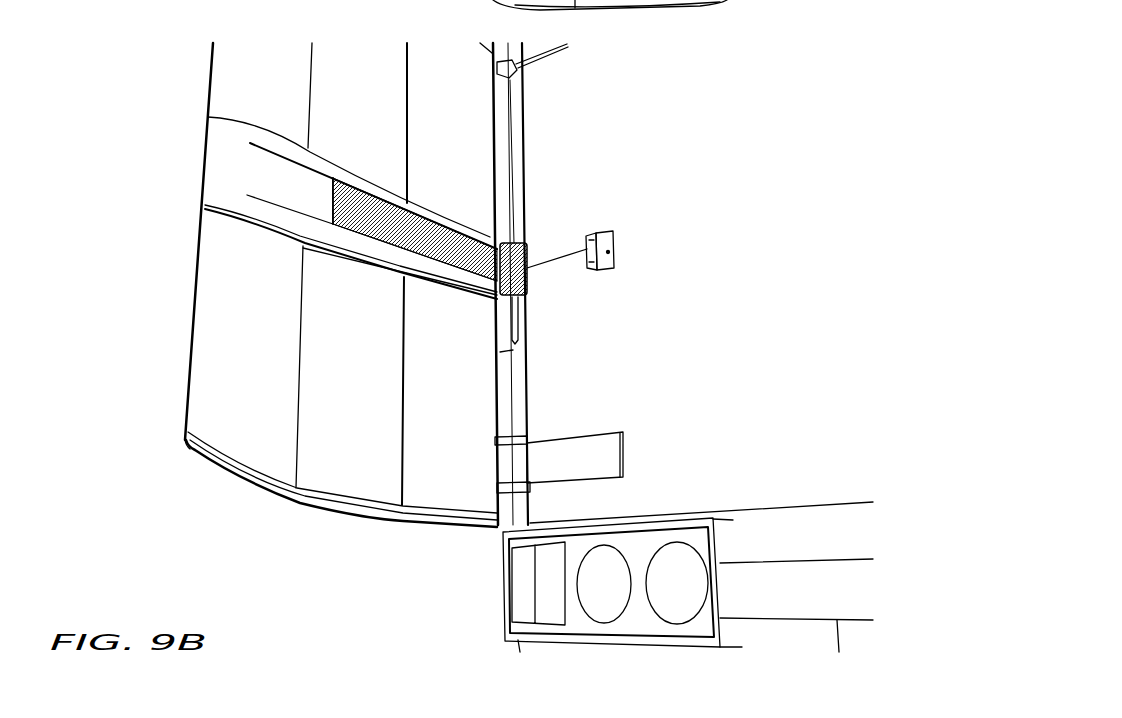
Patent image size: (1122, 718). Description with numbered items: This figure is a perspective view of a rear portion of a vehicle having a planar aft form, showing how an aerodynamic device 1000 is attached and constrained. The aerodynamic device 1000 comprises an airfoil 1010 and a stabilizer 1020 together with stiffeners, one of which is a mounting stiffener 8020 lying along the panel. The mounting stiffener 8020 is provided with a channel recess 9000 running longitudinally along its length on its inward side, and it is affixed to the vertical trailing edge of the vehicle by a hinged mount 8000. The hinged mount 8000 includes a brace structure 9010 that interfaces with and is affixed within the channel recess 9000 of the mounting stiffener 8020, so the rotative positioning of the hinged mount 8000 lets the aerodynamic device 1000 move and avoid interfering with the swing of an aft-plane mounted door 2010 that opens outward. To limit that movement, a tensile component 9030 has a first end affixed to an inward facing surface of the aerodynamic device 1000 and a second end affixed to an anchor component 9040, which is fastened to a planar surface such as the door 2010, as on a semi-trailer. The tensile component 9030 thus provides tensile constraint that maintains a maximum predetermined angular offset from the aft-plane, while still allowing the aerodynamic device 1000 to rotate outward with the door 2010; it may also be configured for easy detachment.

The aerodynamic device 1000 is at (178, 513).
The airfoil 1010 is at (442, 488).
The stabilizer 1020 is at (223, 351).
The door 2010 is at (688, 524).
The hinged mount 8000 is at (548, 292).
The mounting stiffener 8020 is at (212, 167).
The channel recess 9000 is at (418, 210).
The brace structure 9010 is at (462, 257).
The tensile component 9030 is at (558, 252).
The anchor component 9040 is at (612, 267).